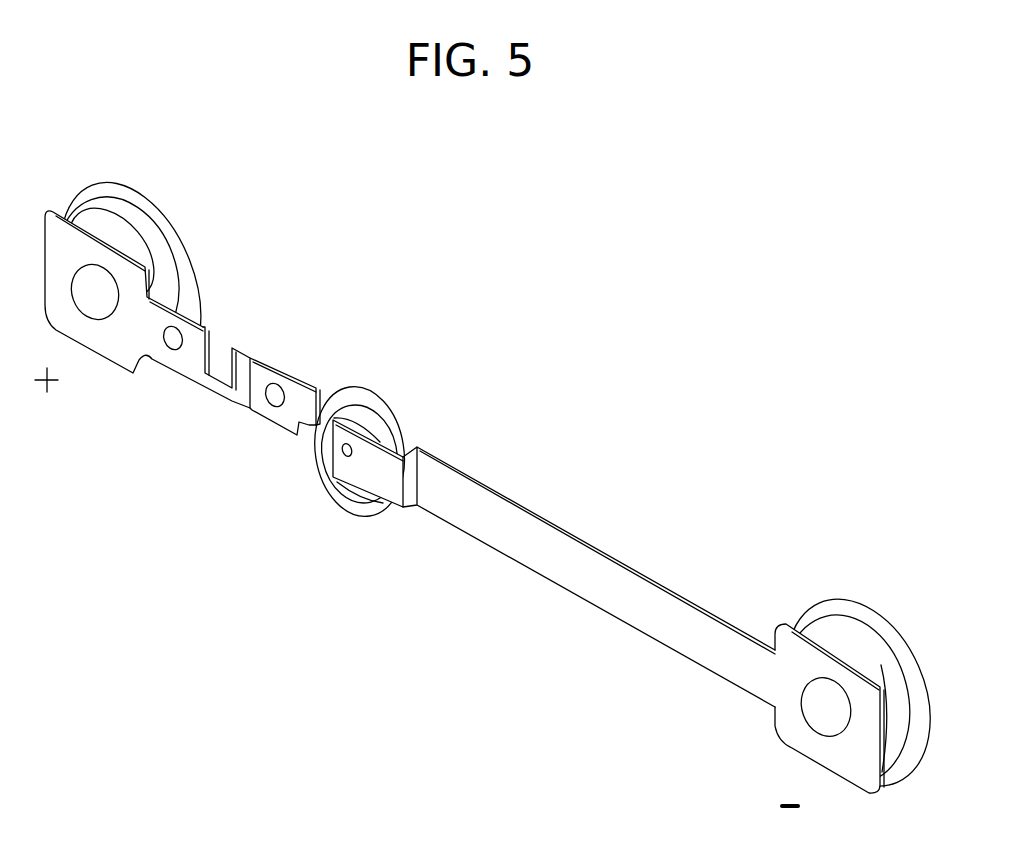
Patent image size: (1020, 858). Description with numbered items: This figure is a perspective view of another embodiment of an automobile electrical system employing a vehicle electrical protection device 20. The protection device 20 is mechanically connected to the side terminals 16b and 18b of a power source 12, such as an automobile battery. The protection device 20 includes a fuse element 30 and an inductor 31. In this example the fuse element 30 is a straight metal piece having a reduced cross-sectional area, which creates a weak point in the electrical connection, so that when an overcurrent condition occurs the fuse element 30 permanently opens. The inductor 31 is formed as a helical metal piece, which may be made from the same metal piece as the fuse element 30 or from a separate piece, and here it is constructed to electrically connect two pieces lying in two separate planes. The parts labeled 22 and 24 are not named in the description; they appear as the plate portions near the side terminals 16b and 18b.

The power source 12 is at (644, 322).
The side terminal 16b is at (134, 217).
The side terminal 18b is at (859, 603).
The protection device 20 is at (485, 604).
The first terminal plate 22 is at (128, 277).
The second terminal plate 24 is at (783, 633).
The fuse element 30 is at (250, 358).
The inductor 31 is at (363, 407).